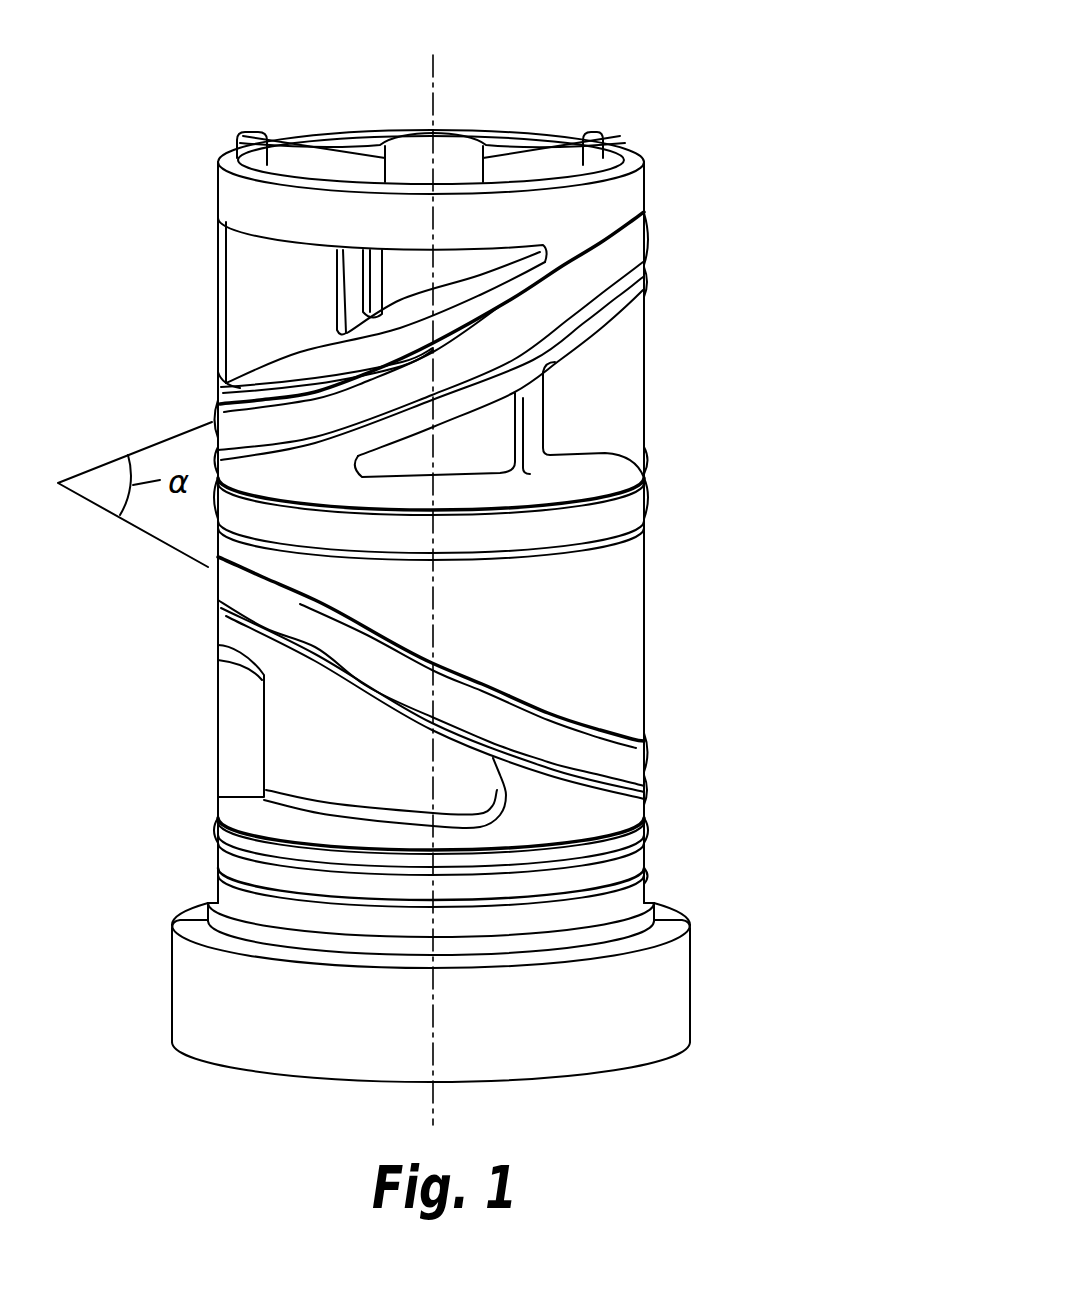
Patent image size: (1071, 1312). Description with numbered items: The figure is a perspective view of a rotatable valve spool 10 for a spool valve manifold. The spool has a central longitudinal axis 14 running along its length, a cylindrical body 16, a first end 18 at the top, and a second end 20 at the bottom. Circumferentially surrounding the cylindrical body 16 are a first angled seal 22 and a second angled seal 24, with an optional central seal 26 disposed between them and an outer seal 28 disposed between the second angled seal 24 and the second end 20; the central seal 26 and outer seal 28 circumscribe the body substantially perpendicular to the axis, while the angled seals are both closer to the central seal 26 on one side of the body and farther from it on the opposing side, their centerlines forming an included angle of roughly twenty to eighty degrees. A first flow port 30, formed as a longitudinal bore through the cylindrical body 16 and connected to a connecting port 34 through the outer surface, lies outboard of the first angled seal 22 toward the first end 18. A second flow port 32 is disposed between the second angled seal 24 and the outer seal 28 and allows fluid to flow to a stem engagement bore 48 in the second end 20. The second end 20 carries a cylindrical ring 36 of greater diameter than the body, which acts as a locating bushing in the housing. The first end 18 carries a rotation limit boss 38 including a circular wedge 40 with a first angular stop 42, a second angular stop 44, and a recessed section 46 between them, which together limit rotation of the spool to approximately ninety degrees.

The rotatable valve spool 10 is at (726, 58).
The central longitudinal axis 14 is at (434, 53).
The cylindrical body 16 is at (630, 636).
The first end 18 is at (460, 136).
The second end 20 is at (593, 1073).
The first angled seal 22 is at (633, 243).
The second angled seal 24 is at (630, 763).
The central seal 26 is at (633, 502).
The outer seal 28 is at (630, 850).
The first flow port 30 is at (400, 288).
The second flow port 32 is at (233, 727).
The connecting port 34 is at (247, 352).
The cylindrical ring 36 is at (680, 994).
The rotation limit boss 38 is at (607, 131).
The circular wedge 40 is at (230, 195).
The first angular stop 42 is at (297, 137).
The second angular stop 44 is at (553, 133).
The recessed section 46 is at (407, 147).
The stem engagement bore 48 is at (307, 762).